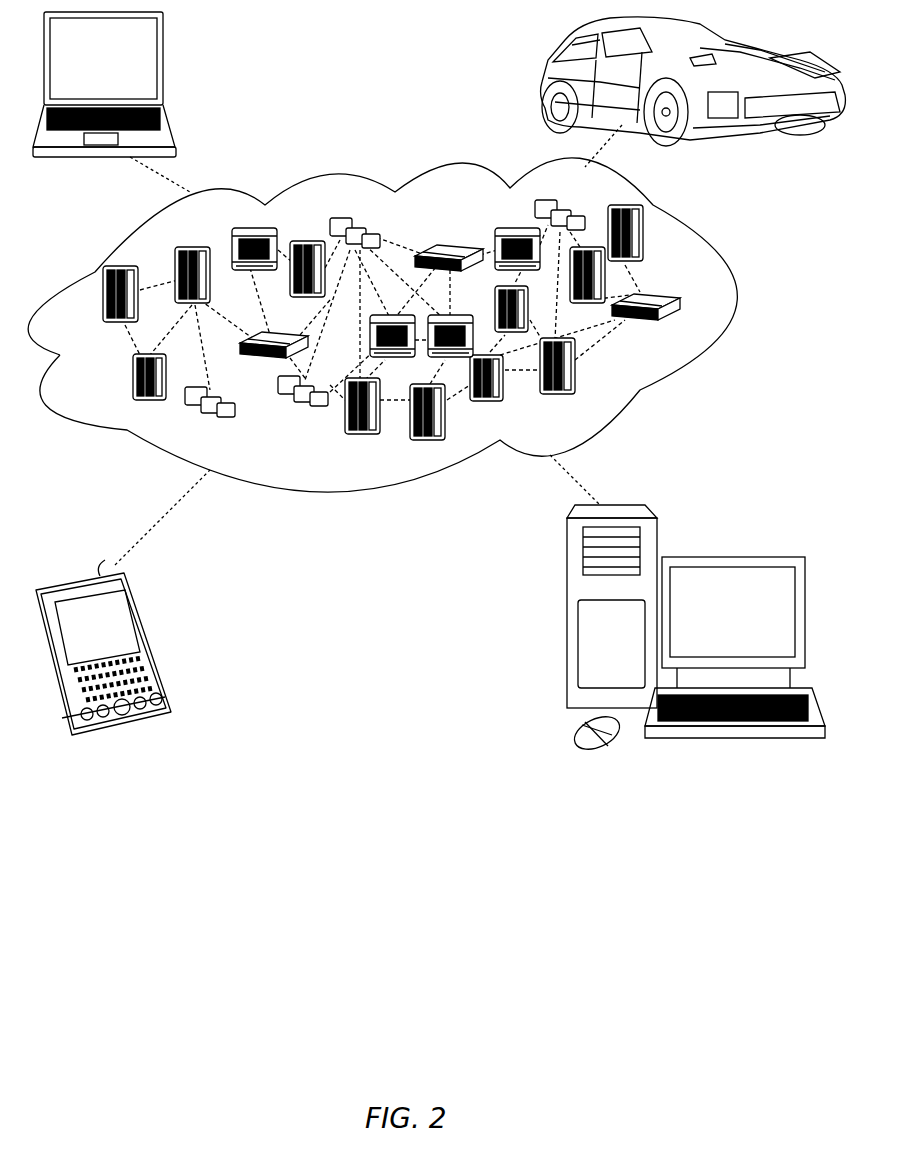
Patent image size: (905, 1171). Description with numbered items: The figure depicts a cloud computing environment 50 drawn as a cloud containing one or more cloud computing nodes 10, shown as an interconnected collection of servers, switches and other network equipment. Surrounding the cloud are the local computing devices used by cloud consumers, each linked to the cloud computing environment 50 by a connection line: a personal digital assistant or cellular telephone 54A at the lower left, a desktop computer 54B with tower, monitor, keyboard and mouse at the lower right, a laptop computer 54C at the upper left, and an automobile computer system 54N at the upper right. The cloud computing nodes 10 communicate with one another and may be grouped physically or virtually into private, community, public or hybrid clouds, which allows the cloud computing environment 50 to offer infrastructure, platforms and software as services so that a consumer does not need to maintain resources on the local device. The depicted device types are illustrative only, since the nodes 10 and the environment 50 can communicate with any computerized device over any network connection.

The cloud computing node 10 is at (680, 330).
The cloud computing environment 50 is at (735, 292).
The personal digital assistant or cellular telephone 54A is at (150, 642).
The desktop computer 54B is at (730, 558).
The laptop computer 54C is at (163, 67).
The automobile computer system 54N is at (541, 80).